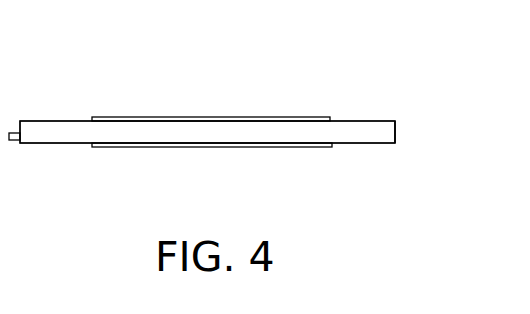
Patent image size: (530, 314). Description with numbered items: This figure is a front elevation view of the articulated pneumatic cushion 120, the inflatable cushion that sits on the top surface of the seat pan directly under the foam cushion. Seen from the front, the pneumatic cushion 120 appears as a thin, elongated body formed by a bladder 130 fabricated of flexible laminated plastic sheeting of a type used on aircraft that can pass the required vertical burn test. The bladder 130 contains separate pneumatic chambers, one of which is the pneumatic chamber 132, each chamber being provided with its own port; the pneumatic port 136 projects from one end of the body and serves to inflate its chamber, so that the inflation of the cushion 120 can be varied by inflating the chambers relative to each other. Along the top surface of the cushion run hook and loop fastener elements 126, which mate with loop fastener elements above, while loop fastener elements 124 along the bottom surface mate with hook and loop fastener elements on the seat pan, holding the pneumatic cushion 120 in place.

The pneumatic cushion 120 is at (205, 74).
The loop fastener elements 124 is at (185, 148).
The hook and loop fastener elements 126 is at (247, 118).
The bladder 130 is at (387, 120).
The pneumatic chamber 132 is at (60, 126).
The pneumatic port 136 is at (12, 141).